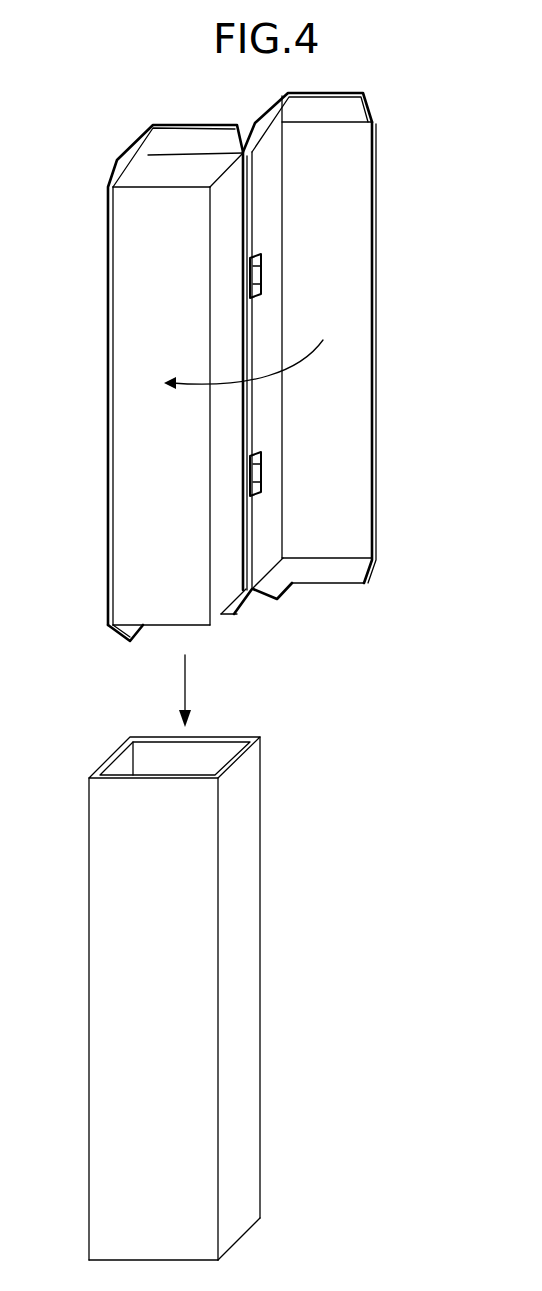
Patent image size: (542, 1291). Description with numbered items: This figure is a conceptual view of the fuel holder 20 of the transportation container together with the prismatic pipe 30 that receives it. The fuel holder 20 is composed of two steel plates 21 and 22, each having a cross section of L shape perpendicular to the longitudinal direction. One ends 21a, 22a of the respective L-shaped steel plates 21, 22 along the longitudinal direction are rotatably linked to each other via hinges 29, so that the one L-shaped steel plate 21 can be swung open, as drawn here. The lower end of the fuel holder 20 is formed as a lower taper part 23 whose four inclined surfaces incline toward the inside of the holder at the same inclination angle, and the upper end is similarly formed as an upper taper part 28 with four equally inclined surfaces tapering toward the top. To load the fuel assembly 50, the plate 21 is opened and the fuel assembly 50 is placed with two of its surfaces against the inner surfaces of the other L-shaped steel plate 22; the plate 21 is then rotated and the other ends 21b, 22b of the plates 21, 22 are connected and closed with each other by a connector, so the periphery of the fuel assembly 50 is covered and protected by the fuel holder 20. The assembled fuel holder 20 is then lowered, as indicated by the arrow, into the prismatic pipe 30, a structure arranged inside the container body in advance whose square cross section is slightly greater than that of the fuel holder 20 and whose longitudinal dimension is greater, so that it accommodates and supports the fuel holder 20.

The fuel holder 20 is at (353, 370).
The L-shaped steel plate 21 is at (353, 341).
The one end of L-shaped steel plate 21a is at (253, 208).
The other end of L-shaped steel plate 21b is at (372, 331).
The L-shaped steel plate 22 is at (134, 363).
The one end of L-shaped steel plate 22a is at (245, 246).
The other end of L-shaped steel plate 22b is at (108, 318).
The lower taper part 23 is at (302, 606).
The upper taper part 28 is at (123, 138).
The hinges 29 is at (261, 274).
The prismatic pipe 30 is at (250, 996).
The fuel assembly 50 is at (125, 441).